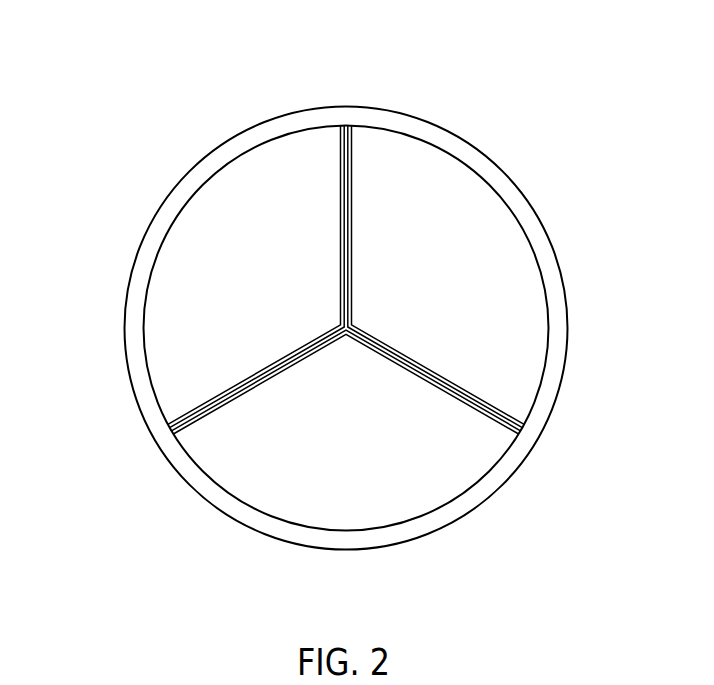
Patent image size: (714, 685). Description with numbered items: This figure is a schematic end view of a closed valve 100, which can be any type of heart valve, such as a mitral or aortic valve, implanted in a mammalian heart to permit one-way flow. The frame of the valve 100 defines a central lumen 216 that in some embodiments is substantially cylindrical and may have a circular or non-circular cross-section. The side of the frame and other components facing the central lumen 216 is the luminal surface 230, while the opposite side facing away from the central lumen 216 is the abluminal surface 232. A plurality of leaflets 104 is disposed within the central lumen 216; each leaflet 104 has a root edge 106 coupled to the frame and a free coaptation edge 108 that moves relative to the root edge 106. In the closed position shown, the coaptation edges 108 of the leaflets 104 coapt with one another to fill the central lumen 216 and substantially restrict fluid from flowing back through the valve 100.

The valve 100 is at (395, 128).
The leaflet 104 is at (255, 210).
The root edge 106 is at (163, 238).
The coaptation edge 108 is at (507, 412).
The central lumen 216 is at (402, 457).
The luminal surface 230 is at (287, 520).
The abluminal surface 232 is at (238, 533).